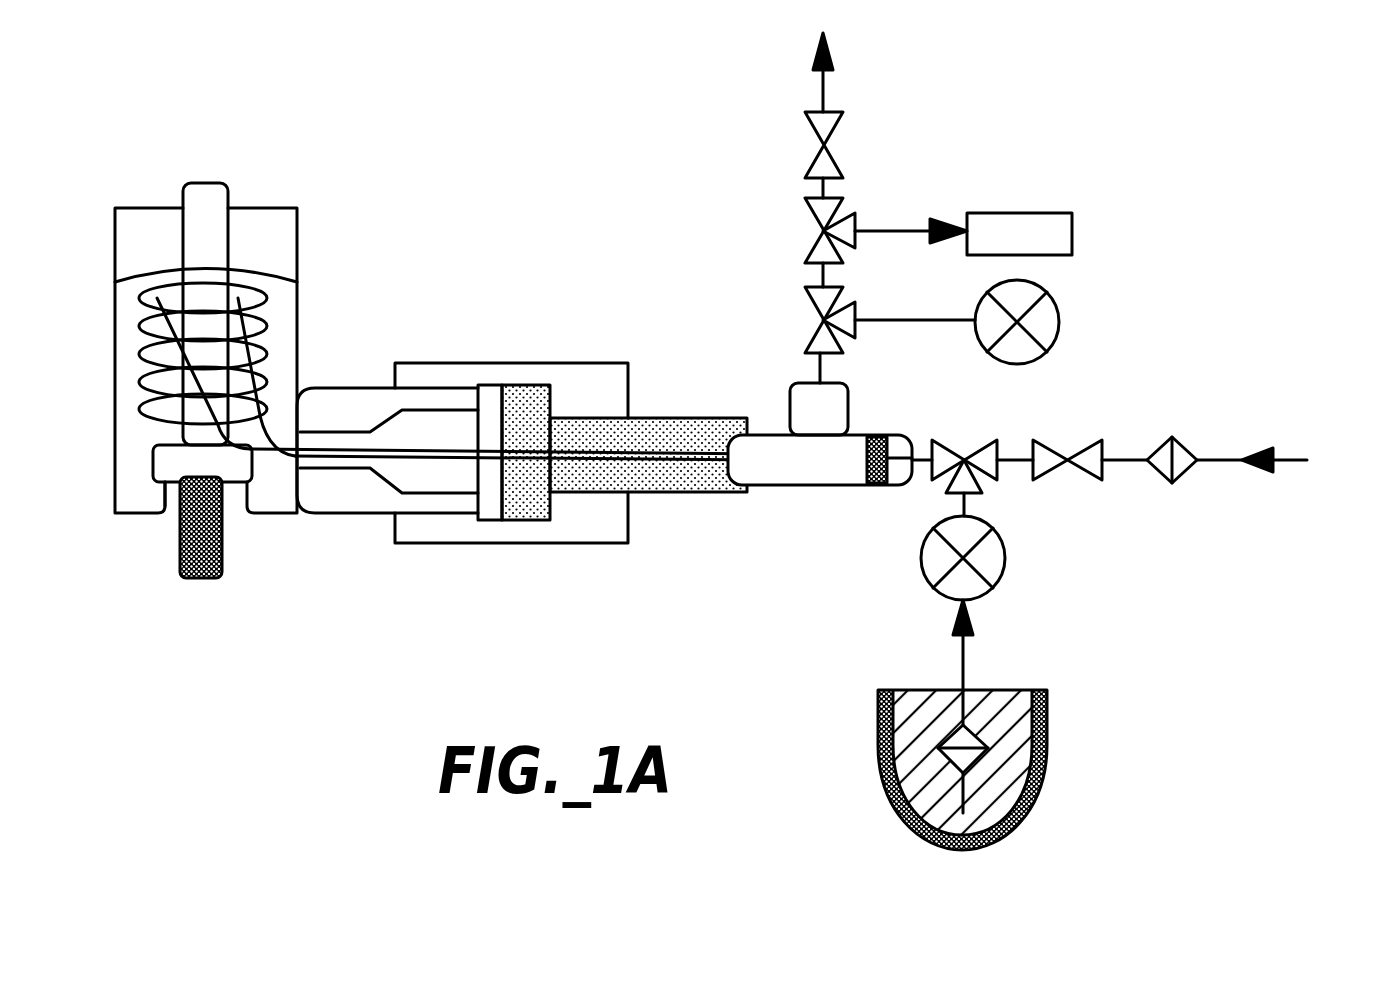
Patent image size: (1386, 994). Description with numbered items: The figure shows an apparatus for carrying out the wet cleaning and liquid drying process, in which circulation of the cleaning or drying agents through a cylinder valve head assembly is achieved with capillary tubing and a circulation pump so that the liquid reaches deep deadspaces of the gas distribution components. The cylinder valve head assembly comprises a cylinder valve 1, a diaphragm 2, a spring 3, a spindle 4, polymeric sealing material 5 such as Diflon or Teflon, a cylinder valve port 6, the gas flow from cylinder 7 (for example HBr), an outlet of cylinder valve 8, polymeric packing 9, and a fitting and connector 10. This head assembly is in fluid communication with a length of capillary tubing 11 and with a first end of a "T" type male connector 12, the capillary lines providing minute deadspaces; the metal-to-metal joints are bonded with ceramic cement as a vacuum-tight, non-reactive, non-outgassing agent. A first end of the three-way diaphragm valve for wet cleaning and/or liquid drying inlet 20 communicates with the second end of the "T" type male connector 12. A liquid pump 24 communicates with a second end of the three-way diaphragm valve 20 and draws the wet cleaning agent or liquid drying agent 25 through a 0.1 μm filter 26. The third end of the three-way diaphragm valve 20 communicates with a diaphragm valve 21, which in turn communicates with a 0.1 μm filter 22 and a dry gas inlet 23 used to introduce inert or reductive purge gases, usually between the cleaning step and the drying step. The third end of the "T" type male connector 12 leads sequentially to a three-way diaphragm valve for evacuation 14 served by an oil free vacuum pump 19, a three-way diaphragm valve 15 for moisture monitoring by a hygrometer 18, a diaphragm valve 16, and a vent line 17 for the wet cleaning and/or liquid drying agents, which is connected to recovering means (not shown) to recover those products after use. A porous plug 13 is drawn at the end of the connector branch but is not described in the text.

The cylinder valve 1 is at (206, 182).
The diaphragm 2 is at (292, 268).
The spring 3 is at (268, 308).
The spindle 4 is at (217, 358).
The polymeric sealing material 5 is at (233, 468).
The cylinder valve port 6 is at (175, 482).
The gas flow from cylinder 7 is at (200, 580).
The outlet of cylinder valve 8 is at (395, 470).
The polymeric packing 9 is at (488, 512).
The fitting and connector 10 is at (552, 368).
The capillary tubing 11 is at (690, 455).
The "T" type male connector 12 is at (830, 476).
The porous plug 13 is at (878, 438).
The three-way diaphragm valve for evacuation 14 is at (808, 333).
The three-way diaphragm valve for moisture monitor 15 is at (808, 245).
The diaphragm valve 16 is at (808, 162).
The vent line 17 is at (822, 95).
The hygrometer 18 is at (1045, 212).
The oil free vacuum pump 19 is at (1060, 330).
The three-way diaphragm valve for wet cleaning and/or liquid drying inlet 20 is at (950, 445).
The diaphragm valve 21 is at (1055, 445).
The 0.1 μm filter 22 is at (1187, 447).
The dry gas inlet 23 is at (1285, 462).
The liquid pump 24 is at (1005, 562).
The wet cleaning agent or liquid drying agent 25 is at (990, 698).
The 0.1 μm filter 26 is at (948, 740).